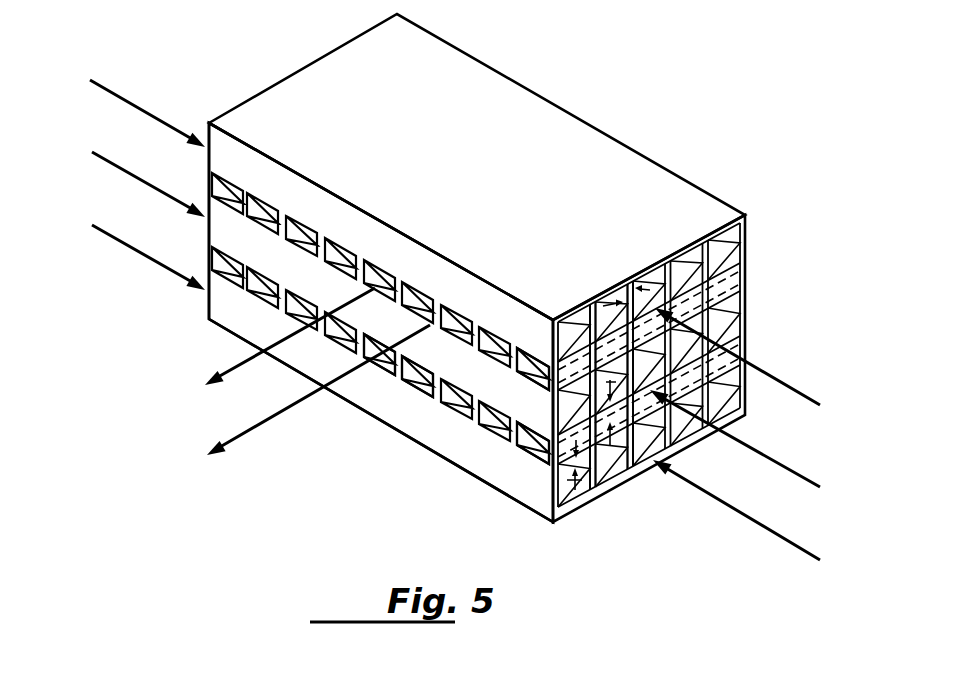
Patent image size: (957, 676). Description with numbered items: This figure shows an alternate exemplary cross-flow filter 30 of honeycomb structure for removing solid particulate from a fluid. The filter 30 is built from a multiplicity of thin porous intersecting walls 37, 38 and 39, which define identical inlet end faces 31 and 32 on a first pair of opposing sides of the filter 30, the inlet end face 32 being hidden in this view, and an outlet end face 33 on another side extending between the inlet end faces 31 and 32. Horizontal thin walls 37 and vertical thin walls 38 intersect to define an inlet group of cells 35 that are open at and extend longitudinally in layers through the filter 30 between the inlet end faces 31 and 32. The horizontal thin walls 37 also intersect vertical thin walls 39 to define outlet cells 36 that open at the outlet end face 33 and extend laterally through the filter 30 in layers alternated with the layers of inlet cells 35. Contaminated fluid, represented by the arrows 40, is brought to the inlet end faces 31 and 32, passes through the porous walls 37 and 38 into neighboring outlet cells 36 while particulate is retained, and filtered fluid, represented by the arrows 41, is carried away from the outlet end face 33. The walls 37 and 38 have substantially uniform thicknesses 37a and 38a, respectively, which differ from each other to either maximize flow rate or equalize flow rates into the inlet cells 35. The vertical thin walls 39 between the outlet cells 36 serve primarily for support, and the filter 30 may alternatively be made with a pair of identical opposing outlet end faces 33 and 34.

The cross-flow filter 30 is at (505, 120).
The inlet end face 31 is at (730, 283).
The inlet end face 32 is at (207, 202).
The outlet end face 33 is at (282, 257).
The outlet end face 34 is at (608, 135).
The inlet cells 35 is at (749, 215).
The outlet cells 36 is at (533, 445).
The horizontal thin walls 37 is at (595, 365).
The thickness 37a is at (575, 462).
The vertical thin walls 38 is at (690, 266).
The thickness 38a is at (650, 290).
The vertical thin walls 39 is at (428, 392).
The arrows 40 is at (90, 237).
The arrows 41 is at (205, 370).